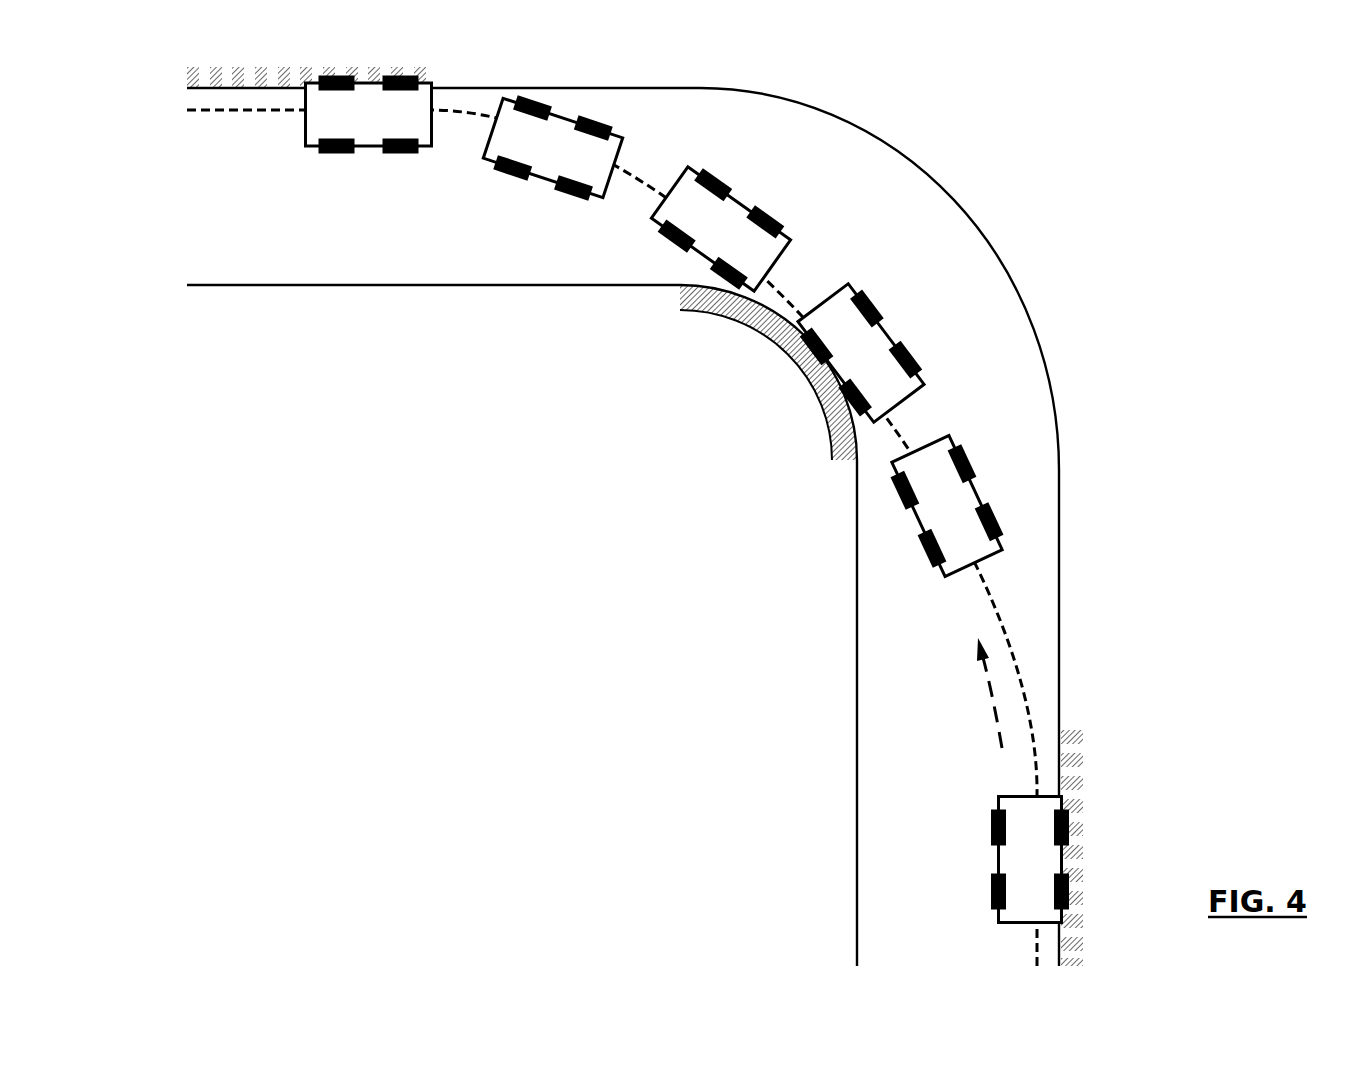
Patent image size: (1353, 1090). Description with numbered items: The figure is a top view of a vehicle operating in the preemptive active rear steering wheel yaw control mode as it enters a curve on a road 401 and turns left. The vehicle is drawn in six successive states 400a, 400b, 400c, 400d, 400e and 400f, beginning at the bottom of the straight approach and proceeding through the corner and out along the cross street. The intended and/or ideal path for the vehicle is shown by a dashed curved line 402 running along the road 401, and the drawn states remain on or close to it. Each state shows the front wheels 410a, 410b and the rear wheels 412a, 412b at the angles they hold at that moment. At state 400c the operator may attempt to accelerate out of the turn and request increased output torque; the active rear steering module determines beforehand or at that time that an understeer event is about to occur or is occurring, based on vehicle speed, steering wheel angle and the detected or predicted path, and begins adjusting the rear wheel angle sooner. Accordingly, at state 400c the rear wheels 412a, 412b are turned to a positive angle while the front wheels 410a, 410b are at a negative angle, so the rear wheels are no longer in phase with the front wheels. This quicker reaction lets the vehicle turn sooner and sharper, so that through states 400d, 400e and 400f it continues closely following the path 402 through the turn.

The vehicle state 400a is at (1047, 803).
The vehicle state 400b is at (1000, 549).
The vehicle state 400c is at (922, 382).
The vehicle state 400d is at (790, 240).
The vehicle state 400e is at (623, 140).
The vehicle state 400f is at (434, 112).
The road 401 is at (975, 222).
The dashed curved line 402 is at (243, 112).
The front wheel 410a is at (342, 157).
The front wheel 410b is at (336, 78).
The rear wheel 412a is at (398, 157).
The rear wheel 412b is at (410, 78).